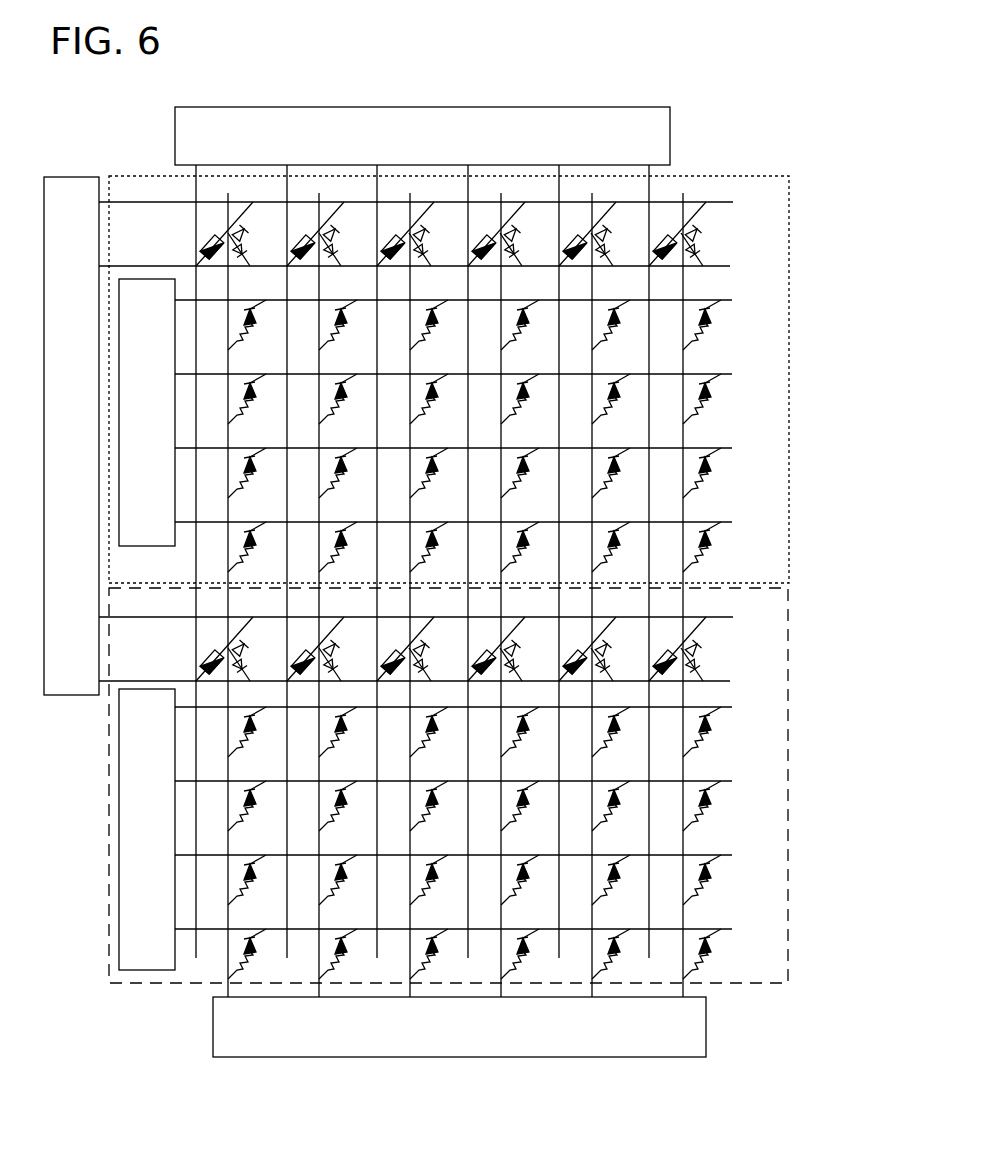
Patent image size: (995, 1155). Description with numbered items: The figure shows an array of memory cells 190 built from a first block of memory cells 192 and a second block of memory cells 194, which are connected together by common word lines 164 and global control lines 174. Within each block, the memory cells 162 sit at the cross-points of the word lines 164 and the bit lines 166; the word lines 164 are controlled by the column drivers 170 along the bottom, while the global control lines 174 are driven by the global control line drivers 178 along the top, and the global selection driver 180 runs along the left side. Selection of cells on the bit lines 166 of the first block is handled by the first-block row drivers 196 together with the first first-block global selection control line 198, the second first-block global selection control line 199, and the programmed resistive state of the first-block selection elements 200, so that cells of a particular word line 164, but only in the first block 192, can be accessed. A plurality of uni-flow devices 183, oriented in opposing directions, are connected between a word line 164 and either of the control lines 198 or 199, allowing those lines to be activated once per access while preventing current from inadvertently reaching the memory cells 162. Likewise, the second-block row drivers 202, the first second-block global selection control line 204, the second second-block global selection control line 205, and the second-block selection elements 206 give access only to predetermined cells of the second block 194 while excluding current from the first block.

The array of memory cells 190 is at (712, 62).
The global control line drivers 178 is at (321, 107).
The first block of memory cells 192 is at (766, 176).
The second block of memory cells 194 is at (780, 983).
The global control line 174 is at (196, 189).
The word lines 164 is at (683, 195).
The bit lines 166 is at (729, 373).
The memory cells 162 is at (722, 487).
The block 1 selection elements 200 is at (567, 221).
The block 2 selection elements 206 is at (570, 637).
The uni-flow devices 183 is at (620, 226).
The second block 1 global selection control line 199 is at (118, 203).
The first block 1 global selection control line 198 is at (193, 265).
The second block 2 global selection control line 205 is at (118, 618).
The first block 2 global selection control line 204 is at (193, 680).
The block 1 row drivers 196 is at (165, 546).
The block 2 row drivers 202 is at (160, 970).
The selection driver 180 is at (89, 695).
The column drivers 170 is at (704, 1052).